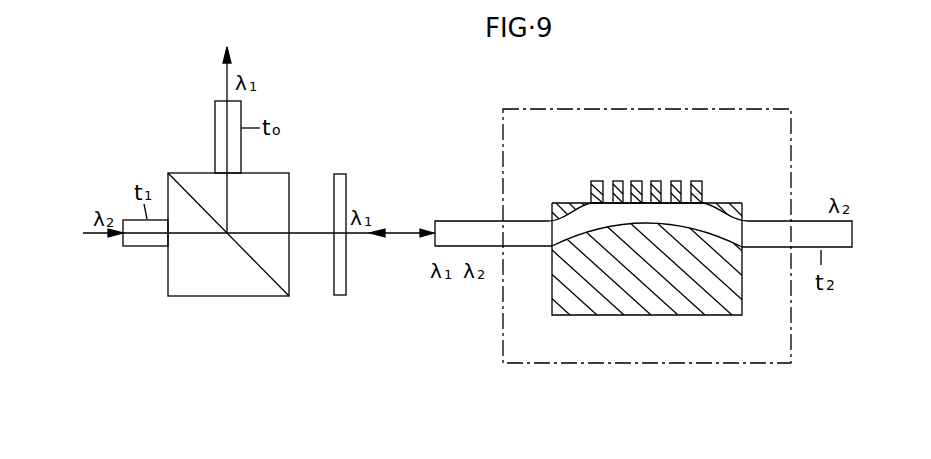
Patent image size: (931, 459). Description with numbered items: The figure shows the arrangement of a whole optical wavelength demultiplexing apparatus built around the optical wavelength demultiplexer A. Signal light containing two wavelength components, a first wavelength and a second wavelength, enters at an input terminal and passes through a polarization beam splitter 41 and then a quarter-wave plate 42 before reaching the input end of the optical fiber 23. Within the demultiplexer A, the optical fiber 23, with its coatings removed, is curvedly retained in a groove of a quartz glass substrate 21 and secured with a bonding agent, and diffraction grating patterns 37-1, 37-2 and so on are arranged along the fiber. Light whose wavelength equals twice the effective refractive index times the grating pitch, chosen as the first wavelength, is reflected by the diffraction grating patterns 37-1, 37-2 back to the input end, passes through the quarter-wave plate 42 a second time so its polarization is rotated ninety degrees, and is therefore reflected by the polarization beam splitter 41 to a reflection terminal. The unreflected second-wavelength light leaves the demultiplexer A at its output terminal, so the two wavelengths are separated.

The polarization beam splitter 41 is at (287, 173).
The quarter-wave plate 42 is at (346, 279).
The optical fiber 23 is at (463, 220).
The substrate 21 is at (731, 203).
The diffraction grating pattern 37-1 is at (596, 181).
The diffraction grating pattern 37-2 is at (710, 151).
The optical wavelength demultiplexer A is at (688, 109).